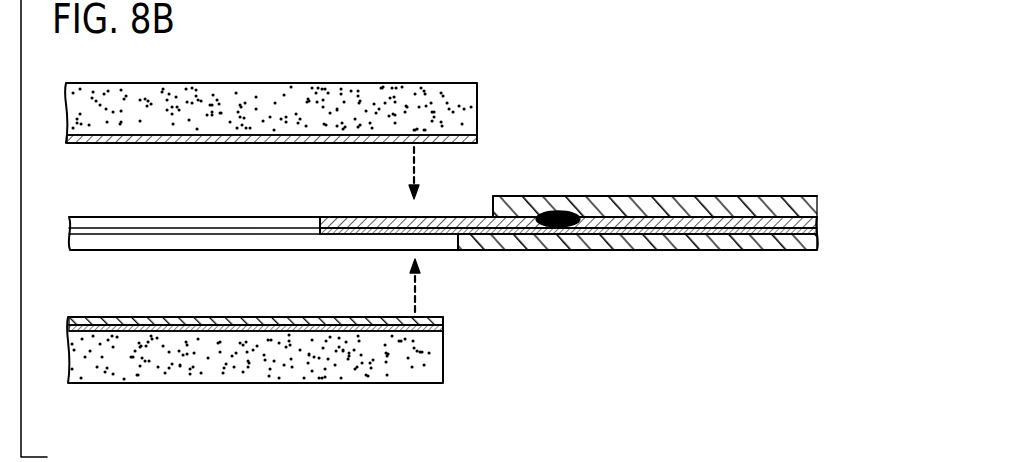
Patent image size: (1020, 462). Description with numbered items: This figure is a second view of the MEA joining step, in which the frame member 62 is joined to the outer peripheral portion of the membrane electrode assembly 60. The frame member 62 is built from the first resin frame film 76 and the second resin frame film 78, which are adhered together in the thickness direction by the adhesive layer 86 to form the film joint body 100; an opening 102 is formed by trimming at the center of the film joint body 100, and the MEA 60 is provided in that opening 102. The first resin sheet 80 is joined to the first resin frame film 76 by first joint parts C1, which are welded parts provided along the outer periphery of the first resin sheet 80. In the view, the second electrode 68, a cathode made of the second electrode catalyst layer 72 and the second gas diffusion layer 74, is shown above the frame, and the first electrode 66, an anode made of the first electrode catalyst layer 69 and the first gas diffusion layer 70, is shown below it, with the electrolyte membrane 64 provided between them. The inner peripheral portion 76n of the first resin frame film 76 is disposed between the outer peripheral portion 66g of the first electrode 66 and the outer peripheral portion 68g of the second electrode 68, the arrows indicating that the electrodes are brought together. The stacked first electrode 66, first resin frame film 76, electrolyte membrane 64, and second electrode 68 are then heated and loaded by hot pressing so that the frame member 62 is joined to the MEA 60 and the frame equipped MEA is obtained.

The membrane electrode assembly 60 is at (474, 64).
The frame member 62 is at (711, 168).
The electrolyte membrane 64 is at (290, 323).
The first electrode 66 is at (295, 424).
The outer peripheral portion of the first electrode 66g is at (395, 372).
The second electrode 68 is at (538, 85).
The outer peripheral portion of the second electrode 68g is at (385, 92).
The first electrode catalyst layer 69 is at (237, 333).
The first gas diffusion layer 70 is at (272, 358).
The second electrode catalyst layer 72 is at (456, 143).
The second gas diffusion layer 74 is at (460, 100).
The first resin frame film 76 is at (680, 222).
The inner peripheral portion of the first resin frame film 76n is at (355, 223).
The second resin frame film 78 is at (725, 245).
The first resin sheet 80 is at (752, 205).
The adhesive layer 86 is at (622, 237).
The film joint body 100 is at (818, 262).
The opening 102 is at (265, 223).
The first joint part C1 is at (559, 212).